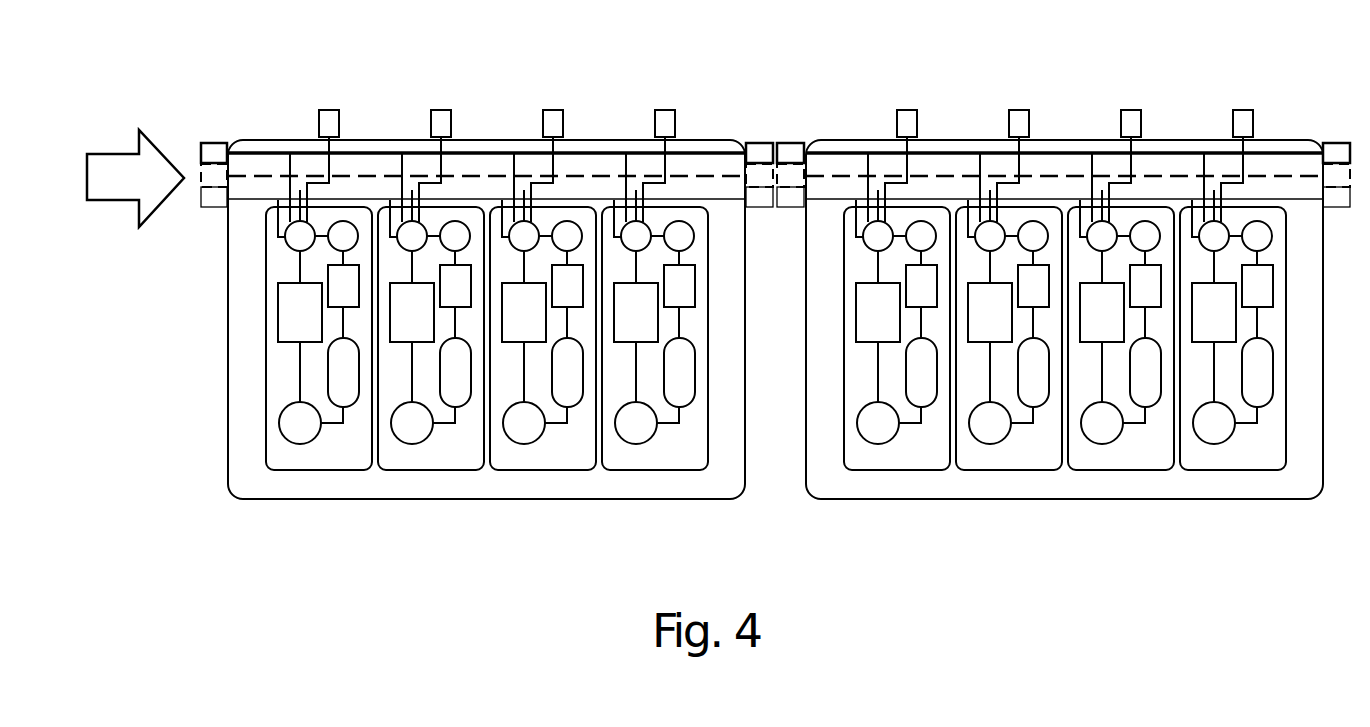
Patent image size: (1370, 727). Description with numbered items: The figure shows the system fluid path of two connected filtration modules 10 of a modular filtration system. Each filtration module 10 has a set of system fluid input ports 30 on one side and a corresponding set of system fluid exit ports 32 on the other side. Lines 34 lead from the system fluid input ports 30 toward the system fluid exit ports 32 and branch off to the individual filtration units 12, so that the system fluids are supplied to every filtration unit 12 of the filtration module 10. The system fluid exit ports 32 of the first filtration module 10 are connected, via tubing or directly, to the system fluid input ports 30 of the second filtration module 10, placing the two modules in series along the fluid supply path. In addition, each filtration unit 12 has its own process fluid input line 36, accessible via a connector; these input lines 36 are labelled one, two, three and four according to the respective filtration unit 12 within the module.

The filtration module 10 is at (608, 500).
The filtration unit 12 is at (305, 458).
The system fluid input port 30 is at (215, 132).
The system fluid exit port 32 is at (753, 132).
The line 34 is at (262, 142).
The process fluid input line 36 is at (329, 110).